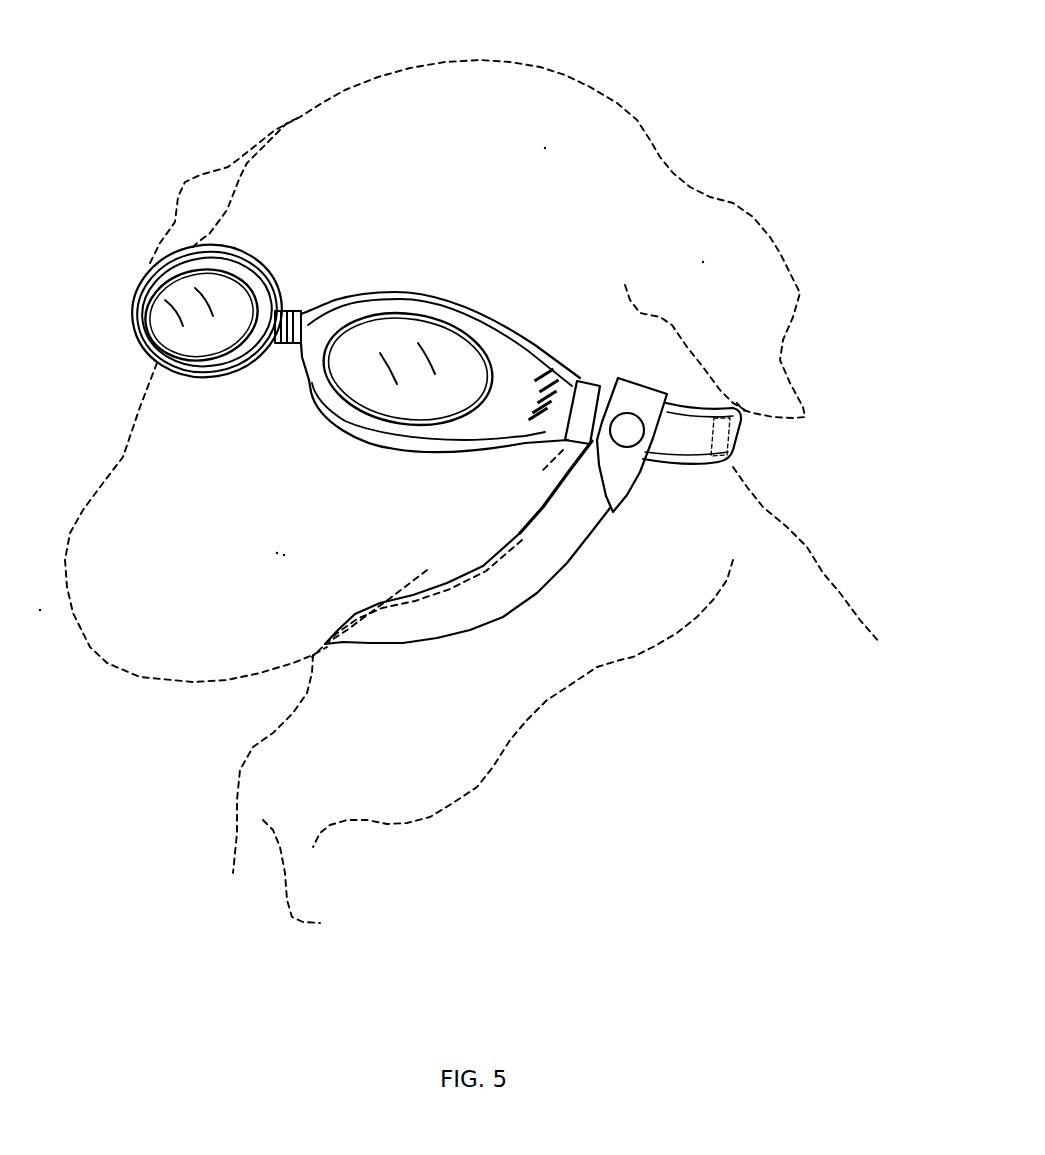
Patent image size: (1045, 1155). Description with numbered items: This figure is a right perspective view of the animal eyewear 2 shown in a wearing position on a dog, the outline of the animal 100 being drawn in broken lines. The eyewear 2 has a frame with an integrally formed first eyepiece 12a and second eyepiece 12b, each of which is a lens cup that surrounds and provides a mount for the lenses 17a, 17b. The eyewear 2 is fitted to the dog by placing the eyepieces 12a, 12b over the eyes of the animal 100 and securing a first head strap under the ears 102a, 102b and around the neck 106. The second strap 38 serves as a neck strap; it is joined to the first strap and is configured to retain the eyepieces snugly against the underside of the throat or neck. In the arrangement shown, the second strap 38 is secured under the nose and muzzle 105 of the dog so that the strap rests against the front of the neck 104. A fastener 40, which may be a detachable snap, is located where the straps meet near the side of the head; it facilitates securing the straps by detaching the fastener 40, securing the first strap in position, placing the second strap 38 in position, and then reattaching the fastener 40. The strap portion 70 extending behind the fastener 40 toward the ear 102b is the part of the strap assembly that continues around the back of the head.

The animal 100 is at (500, 103).
The ear 102a is at (233, 180).
The ear 102b is at (775, 277).
The neck 104 is at (294, 682).
The muzzle 105 is at (218, 583).
The neck 106 is at (790, 573).
The eyewear 2 is at (388, 281).
The first eyepiece 12a is at (440, 370).
The second eyepiece 12b is at (221, 317).
The lens 17a is at (392, 396).
The lens 17b is at (204, 333).
The second strap 38 is at (502, 590).
The fastener 40 is at (621, 438).
The strap end 70 is at (707, 440).